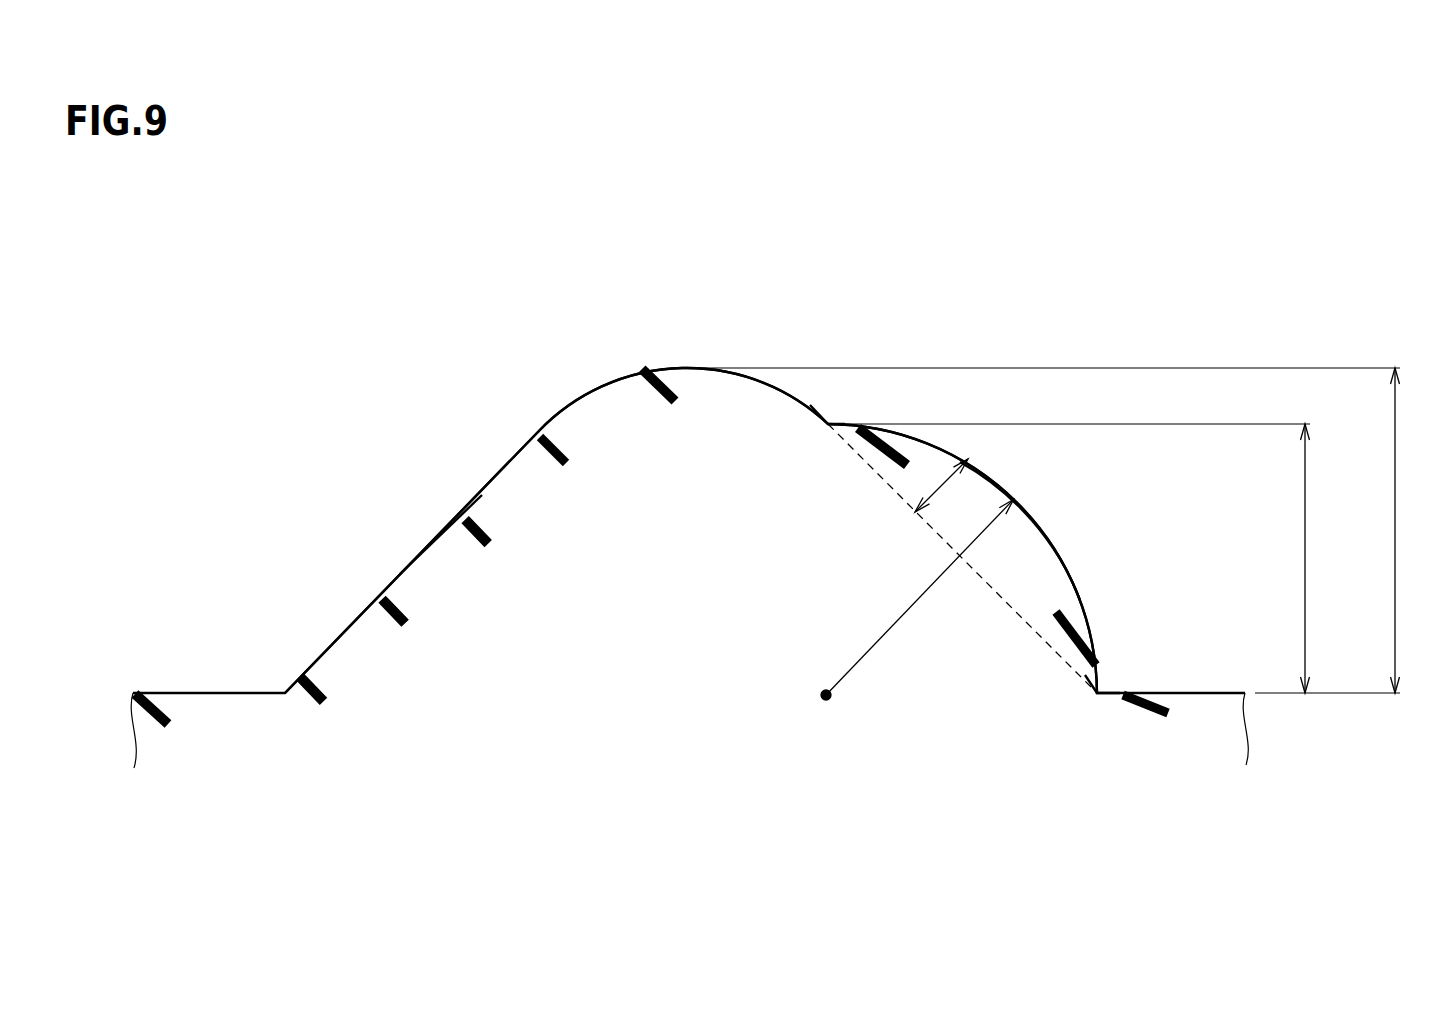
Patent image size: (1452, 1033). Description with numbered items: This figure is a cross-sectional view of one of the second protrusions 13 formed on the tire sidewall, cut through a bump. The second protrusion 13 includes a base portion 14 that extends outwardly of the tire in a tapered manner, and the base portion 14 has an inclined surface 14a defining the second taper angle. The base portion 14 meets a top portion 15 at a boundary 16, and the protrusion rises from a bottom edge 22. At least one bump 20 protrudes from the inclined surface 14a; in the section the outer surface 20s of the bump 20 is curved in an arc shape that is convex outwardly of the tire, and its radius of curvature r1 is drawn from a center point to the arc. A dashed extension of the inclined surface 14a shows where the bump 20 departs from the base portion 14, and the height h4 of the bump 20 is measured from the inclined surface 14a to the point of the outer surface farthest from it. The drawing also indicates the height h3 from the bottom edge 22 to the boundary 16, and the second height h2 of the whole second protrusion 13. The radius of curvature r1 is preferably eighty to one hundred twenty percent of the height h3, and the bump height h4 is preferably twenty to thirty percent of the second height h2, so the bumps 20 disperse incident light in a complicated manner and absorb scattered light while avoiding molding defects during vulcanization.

The second protrusion 13 is at (470, 387).
The base portion 14 is at (420, 558).
The inclined surface 14a is at (482, 495).
The top portion 15 is at (642, 368).
The boundary 16 is at (828, 424).
The bump 20 is at (1050, 517).
The outer surface 20s is at (1062, 553).
The bottom edge 22 is at (1097, 693).
The radius of curvature r1 is at (883, 635).
The height of bump h4 is at (935, 482).
The height h3 is at (1092, 558).
The second height h2 is at (1064, 530).